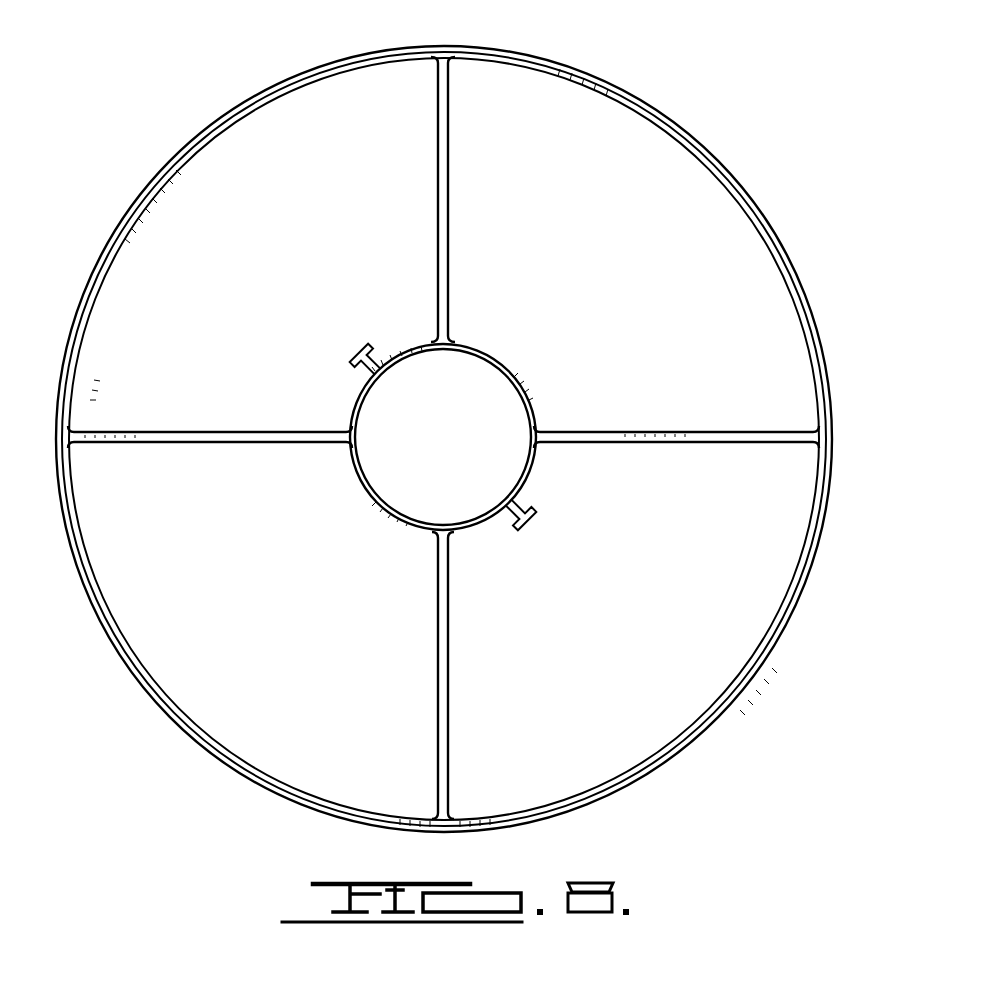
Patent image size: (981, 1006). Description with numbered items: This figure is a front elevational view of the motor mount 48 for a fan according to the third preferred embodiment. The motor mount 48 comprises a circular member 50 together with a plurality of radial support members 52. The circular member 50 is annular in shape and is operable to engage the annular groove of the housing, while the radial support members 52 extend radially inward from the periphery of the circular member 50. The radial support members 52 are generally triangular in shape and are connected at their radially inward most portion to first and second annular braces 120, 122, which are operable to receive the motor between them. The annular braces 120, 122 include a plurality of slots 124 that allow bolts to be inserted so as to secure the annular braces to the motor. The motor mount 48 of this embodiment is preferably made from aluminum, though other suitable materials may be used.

The motor mount 48 is at (713, 157).
The circular member 50 is at (778, 235).
The radial support members 52 is at (445, 187).
The first annular brace 120 is at (528, 388).
The second annular brace 122 is at (368, 493).
The slots 124 is at (370, 350).